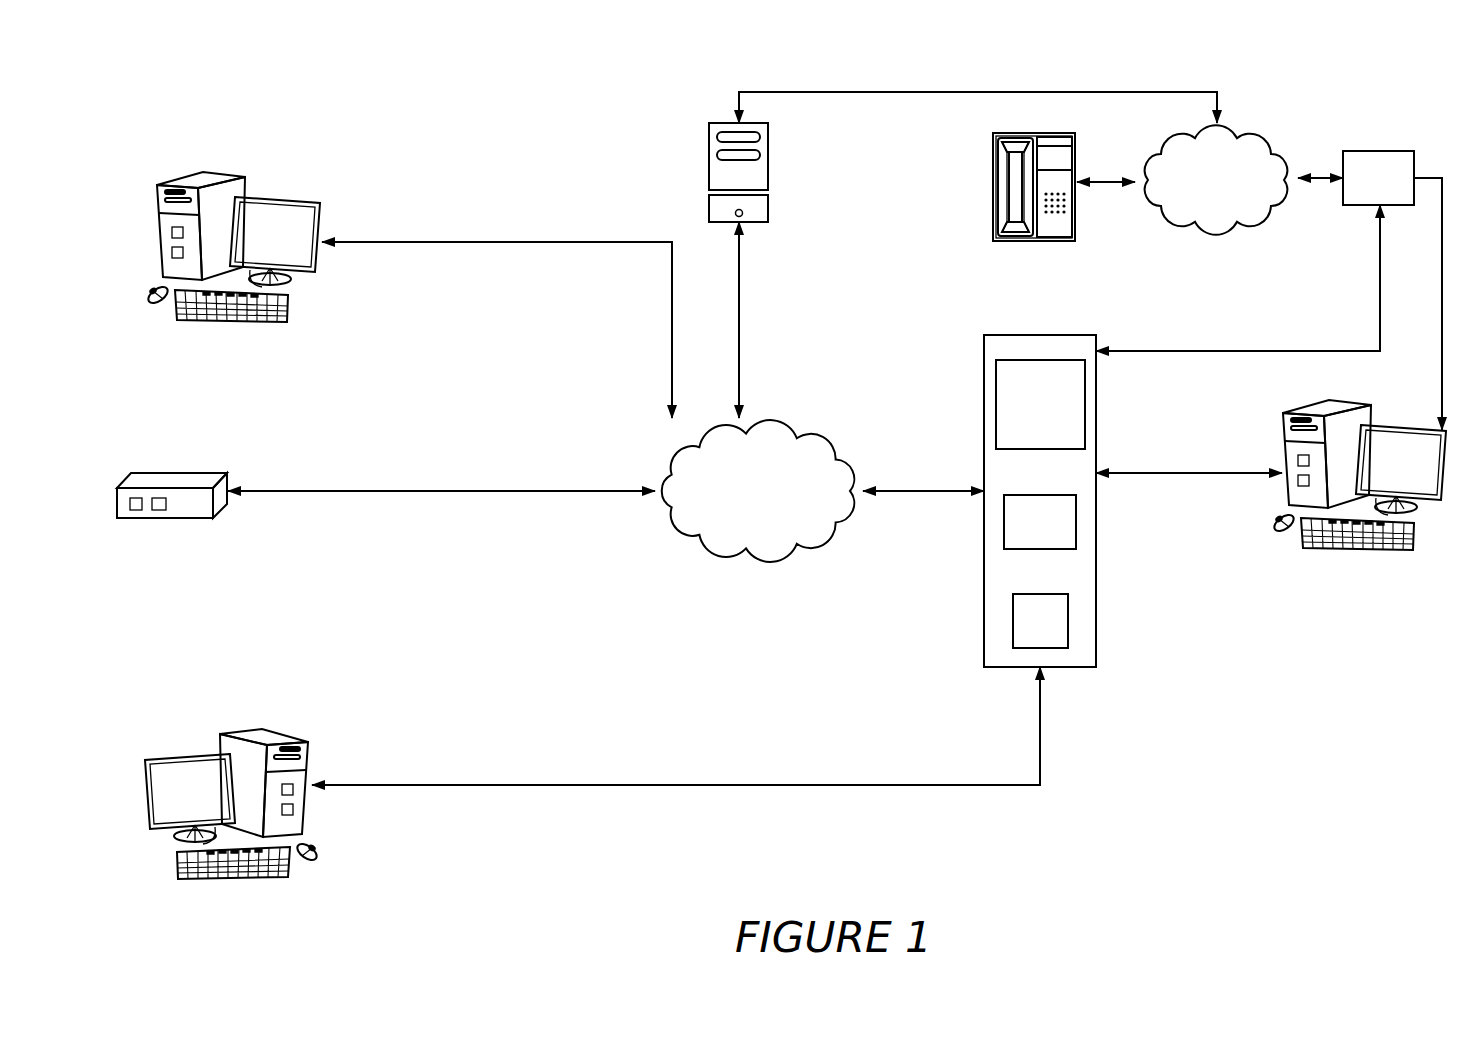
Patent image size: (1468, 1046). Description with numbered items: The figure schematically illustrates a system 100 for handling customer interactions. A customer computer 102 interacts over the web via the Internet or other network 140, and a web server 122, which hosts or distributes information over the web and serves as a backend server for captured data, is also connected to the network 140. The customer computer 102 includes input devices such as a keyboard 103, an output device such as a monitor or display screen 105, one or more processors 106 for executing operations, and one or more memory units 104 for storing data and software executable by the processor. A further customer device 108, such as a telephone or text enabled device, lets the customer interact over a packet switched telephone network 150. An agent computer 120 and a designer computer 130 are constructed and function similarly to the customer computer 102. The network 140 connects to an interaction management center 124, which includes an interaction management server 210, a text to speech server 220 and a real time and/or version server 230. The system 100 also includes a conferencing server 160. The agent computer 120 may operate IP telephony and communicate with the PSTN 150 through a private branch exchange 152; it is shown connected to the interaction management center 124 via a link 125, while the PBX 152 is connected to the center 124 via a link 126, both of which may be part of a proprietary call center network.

The system 100 is at (427, 100).
The customer computer 102 is at (200, 259).
The keyboard 103 is at (246, 323).
The memory unit 104 is at (170, 232).
The display screen 105 is at (301, 211).
The processor 106 is at (170, 256).
The customer device 108 is at (993, 190).
The agent computer 120 is at (1322, 578).
The web server 122 is at (176, 473).
The interaction management center 124 is at (1030, 501).
The link 125 is at (1195, 473).
The link 126 is at (1240, 351).
The designer computer 130 is at (182, 731).
The network 140 is at (755, 563).
The packet switched telephone network 150 is at (1165, 237).
The private branch exchange 152 is at (1408, 151).
The conferencing server 160 is at (709, 160).
The interaction management server 210 is at (1068, 618).
The text to speech server 220 is at (1076, 518).
The real time and/or version server 230 is at (996, 406).